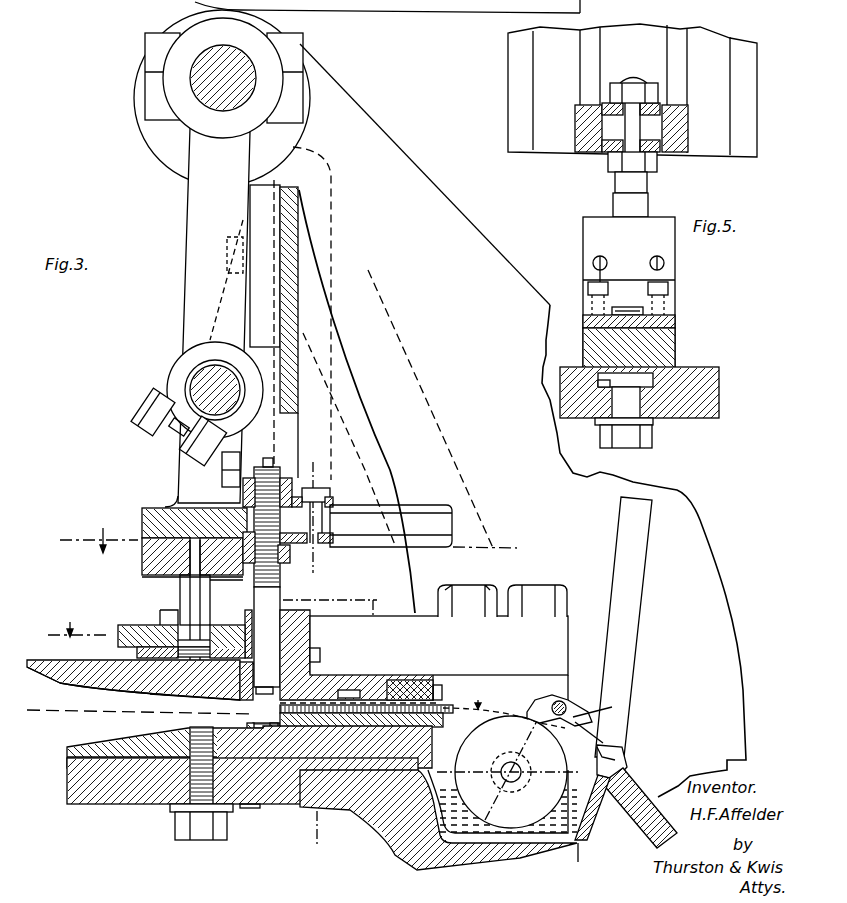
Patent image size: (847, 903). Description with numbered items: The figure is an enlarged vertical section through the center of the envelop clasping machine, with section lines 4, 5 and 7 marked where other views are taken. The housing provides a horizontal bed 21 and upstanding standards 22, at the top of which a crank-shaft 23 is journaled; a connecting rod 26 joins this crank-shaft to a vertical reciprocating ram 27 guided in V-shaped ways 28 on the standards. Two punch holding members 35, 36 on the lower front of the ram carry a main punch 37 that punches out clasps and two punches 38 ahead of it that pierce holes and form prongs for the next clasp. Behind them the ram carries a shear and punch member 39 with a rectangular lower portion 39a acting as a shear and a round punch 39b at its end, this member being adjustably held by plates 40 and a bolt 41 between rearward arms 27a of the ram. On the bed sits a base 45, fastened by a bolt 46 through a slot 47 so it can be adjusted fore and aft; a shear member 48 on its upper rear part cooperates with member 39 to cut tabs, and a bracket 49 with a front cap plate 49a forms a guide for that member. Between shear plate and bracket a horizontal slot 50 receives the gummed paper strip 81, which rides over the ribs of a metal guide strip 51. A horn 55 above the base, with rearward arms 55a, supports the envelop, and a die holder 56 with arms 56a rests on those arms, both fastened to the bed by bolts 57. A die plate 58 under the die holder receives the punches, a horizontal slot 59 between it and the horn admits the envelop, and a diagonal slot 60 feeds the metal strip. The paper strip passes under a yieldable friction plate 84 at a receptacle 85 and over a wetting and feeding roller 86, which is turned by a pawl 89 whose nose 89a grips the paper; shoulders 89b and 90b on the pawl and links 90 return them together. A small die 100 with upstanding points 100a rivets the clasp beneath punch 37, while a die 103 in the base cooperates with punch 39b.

In FIG. 3, the horizontal bed 21 is at (113, 806).
In FIG. 3, the upstanding arms or standards 22 is at (424, 328).
In FIG. 3, the crank-shaft 23 is at (203, 97).
In FIG. 3, the connecting rod 26 is at (187, 315).
In FIG. 3, the vertical reciprocating ram 27 is at (290, 322).
In FIG. 5, the vertical reciprocating ram 27 is at (590, 152).
In FIG. 3, the arms 27a is at (410, 527).
In FIG. 5, the arms 27a is at (672, 145).
In FIG. 3, the V-shaped ways 28 is at (238, 466).
In FIG. 3, the punch holding member 35 is at (180, 578).
In FIG. 3, the punch holding member 36 is at (190, 595).
In FIG. 3, the main punch 37 is at (187, 617).
In FIG. 3, the punches 38 is at (210, 582).
In FIG. 3, the shear and punch member 39 is at (265, 466).
In FIG. 5, the shear and punch member 39 is at (643, 180).
In FIG. 3, the rectangular lower portion 39a is at (262, 637).
In FIG. 3, the punch 39b is at (308, 638).
In FIG. 5, the punch 39b is at (665, 247).
In FIG. 3, the plates 40 is at (330, 500).
In FIG. 5, the plates 40 is at (687, 117).
In FIG. 3, the bolt 41 is at (325, 487).
In FIG. 5, the bolt 41 is at (634, 110).
In FIG. 3, the base 45 is at (67, 750).
In FIG. 5, the base 45 is at (651, 392).
In FIG. 3, the bolt 46 is at (213, 790).
In FIG. 5, the bolt 46 is at (627, 408).
In FIG. 3, the slot 47 is at (255, 805).
In FIG. 5, the slot 47 is at (585, 418).
In FIG. 3, the shear member 48 is at (370, 731).
In FIG. 5, the shear member 48 is at (673, 322).
In FIG. 3, the bracket 49 is at (376, 680).
In FIG. 5, the bracket 49 is at (667, 297).
In FIG. 3, the front cap plate 49a is at (247, 613).
In FIG. 3, the horizontal slot 50 is at (348, 690).
In FIG. 5, the horizontal slot 50 is at (633, 307).
In FIG. 3, the metal guide strip 51 is at (438, 706).
In FIG. 5, the metal guide strip 51 is at (630, 308).
In FIG. 3, the horn 55 is at (133, 680).
In FIG. 3, the arms 55a is at (611, 654).
In FIG. 3, the die holder 56 is at (125, 625).
In FIG. 3, the arms 56a is at (439, 668).
In FIG. 3, the bolts 57 is at (567, 596).
In FIG. 3, the die plate 58 is at (137, 650).
In FIG. 3, the horizontal slot 59 is at (105, 682).
In FIG. 3, the slot 60 is at (227, 635).
In FIG. 3, the gummed paper strip 81 is at (652, 828).
In FIG. 3, the yieldable friction plate 84 is at (637, 797).
In FIG. 3, the receptacle 85 is at (586, 824).
In FIG. 3, the combined wetting and feeding roller 86 is at (508, 771).
In FIG. 3, the pawl 89 is at (617, 753).
In FIG. 3, the nose 89a is at (537, 707).
In FIG. 3, the shoulder 89b is at (590, 712).
In FIG. 3, the links 90 is at (603, 717).
In FIG. 3, the shoulder 90b is at (620, 741).
In FIG. 3, the die 100 is at (167, 694).
In FIG. 3, the upstanding points 100a is at (187, 684).
In FIG. 3, the die 103 is at (246, 694).
In FIG. 5, the die 103 is at (640, 373).
In FIG. 3, the section line 4 is at (281, 416).
In FIG. 3, the irregular section line 5 is at (309, 657).
In FIG. 3, the section line 7 is at (202, 657).